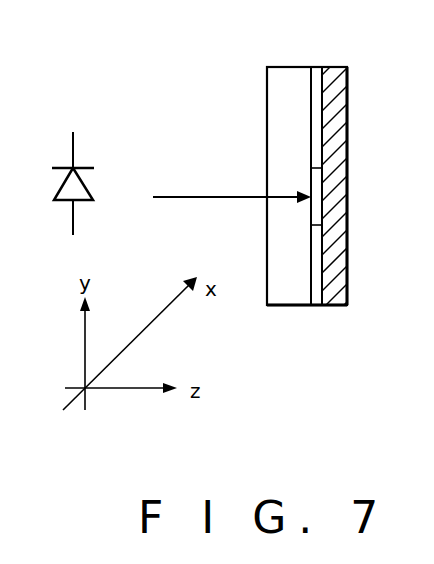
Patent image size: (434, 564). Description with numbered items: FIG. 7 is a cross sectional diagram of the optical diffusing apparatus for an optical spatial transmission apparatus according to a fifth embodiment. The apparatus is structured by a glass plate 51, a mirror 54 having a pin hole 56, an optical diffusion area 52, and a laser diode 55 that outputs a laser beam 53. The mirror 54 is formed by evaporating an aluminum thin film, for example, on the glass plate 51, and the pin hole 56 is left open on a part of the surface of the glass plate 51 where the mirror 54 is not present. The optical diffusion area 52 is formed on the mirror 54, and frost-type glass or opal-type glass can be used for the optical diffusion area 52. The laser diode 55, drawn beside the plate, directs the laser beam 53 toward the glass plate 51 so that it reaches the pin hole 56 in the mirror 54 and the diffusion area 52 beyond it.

The glass plate 51 is at (268, 66).
The optical diffusion area 52 is at (331, 307).
The laser beam 53 is at (164, 196).
The mirror 54 is at (317, 66).
The laser diode 55 is at (72, 133).
The pin hole 56 is at (318, 184).